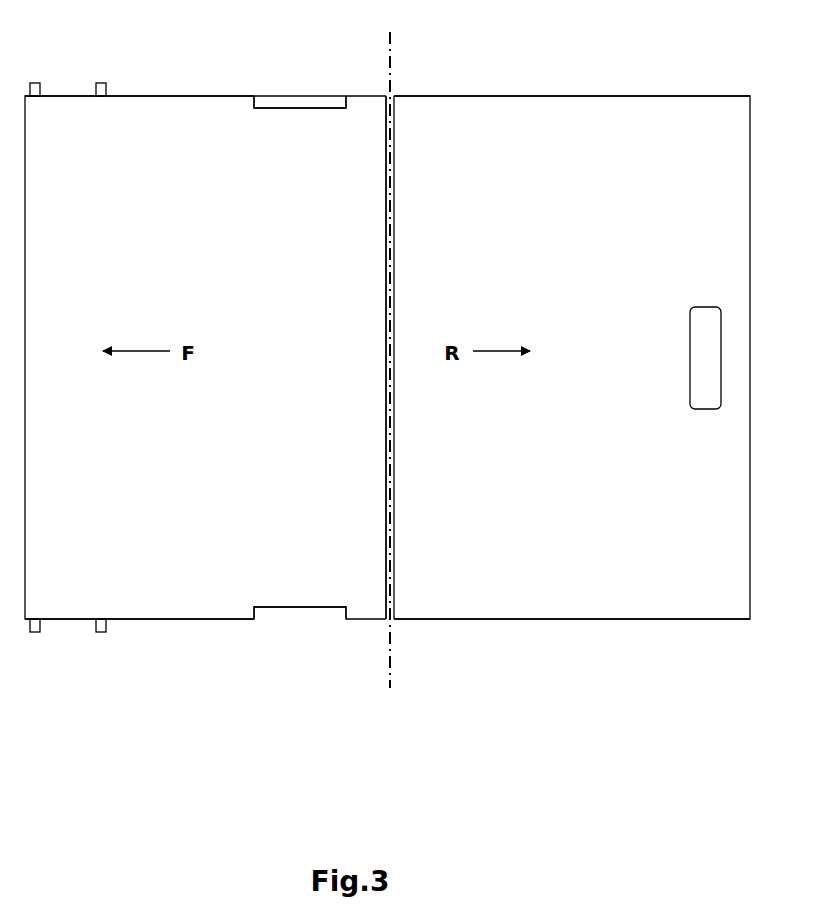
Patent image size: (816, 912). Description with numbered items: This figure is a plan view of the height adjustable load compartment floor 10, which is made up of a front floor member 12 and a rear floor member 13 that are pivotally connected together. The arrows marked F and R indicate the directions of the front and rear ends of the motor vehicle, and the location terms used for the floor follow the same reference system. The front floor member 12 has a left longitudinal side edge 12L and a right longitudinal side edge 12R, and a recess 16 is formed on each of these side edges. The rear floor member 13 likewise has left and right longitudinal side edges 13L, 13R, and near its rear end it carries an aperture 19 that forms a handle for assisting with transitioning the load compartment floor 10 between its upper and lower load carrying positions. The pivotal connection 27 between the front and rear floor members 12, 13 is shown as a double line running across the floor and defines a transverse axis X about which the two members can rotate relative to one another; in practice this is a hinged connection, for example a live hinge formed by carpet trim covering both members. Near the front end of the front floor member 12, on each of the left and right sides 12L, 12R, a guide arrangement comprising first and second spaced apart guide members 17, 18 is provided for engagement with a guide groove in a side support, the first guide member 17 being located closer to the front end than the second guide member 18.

The load compartment floor 10 is at (474, 622).
The front floor member 12 is at (170, 94).
The right longitudinal side edge of front floor member 12R is at (231, 96).
The left longitudinal side edge of front floor member 12L is at (181, 620).
The rear floor member 13 is at (556, 94).
The right longitudinal side edge of rear floor member 13R is at (636, 96).
The left longitudinal side edge of rear floor member 13L is at (567, 620).
The recess 16 is at (287, 108).
The first guide member 17 is at (36, 83).
The second guide member 18 is at (102, 83).
The aperture 19 is at (703, 410).
The pivotal connection 27 is at (400, 219).
The transverse axis X is at (385, 371).